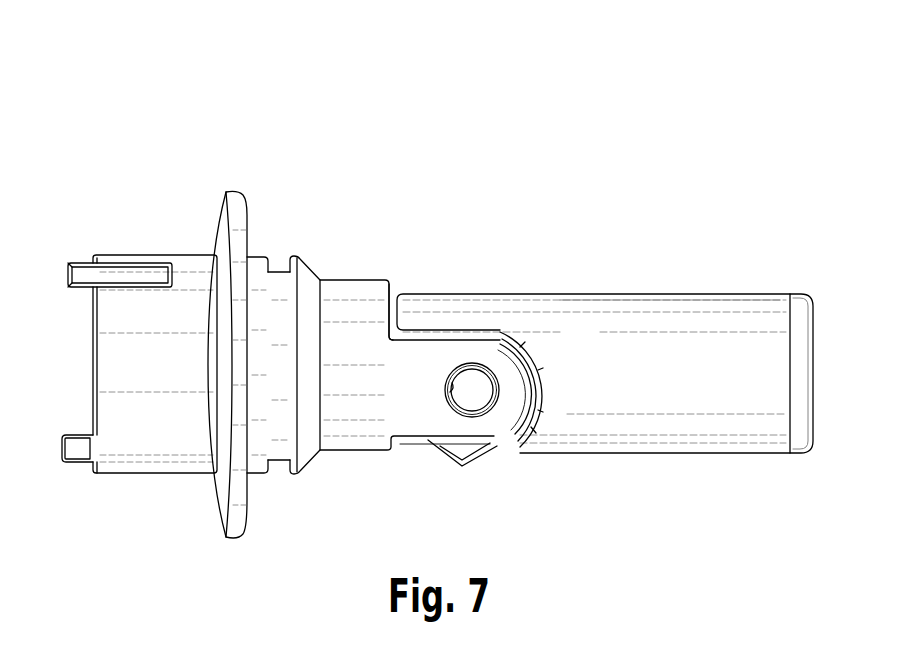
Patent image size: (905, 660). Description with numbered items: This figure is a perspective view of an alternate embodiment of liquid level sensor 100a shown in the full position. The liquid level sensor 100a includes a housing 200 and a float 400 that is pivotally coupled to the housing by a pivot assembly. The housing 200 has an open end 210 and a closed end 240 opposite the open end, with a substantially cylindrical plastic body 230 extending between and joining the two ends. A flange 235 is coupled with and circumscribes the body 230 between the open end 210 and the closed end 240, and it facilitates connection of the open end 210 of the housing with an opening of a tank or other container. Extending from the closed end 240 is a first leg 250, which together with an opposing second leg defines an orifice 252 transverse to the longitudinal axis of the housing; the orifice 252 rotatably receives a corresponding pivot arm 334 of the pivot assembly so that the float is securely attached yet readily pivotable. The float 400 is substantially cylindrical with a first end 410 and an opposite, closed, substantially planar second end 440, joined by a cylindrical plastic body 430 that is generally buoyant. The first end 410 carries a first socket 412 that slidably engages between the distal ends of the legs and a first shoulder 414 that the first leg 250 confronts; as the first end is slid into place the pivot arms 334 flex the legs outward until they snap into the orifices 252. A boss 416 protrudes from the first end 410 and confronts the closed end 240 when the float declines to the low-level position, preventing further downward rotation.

The liquid level sensor 100a is at (524, 112).
The housing 200 is at (278, 226).
The open end 210 is at (82, 309).
The body 230 is at (157, 258).
The flange 235 is at (229, 190).
The closed end 240 is at (389, 283).
The first leg 250 is at (493, 360).
The orifice 252 is at (452, 393).
The pivot arm 334 is at (478, 396).
The float 400 is at (696, 257).
The first end 410 is at (435, 307).
The first socket 412 is at (458, 338).
The first shoulder 414 is at (531, 411).
The boss 416 is at (461, 460).
The body 430 is at (633, 352).
The second end 440 is at (810, 357).